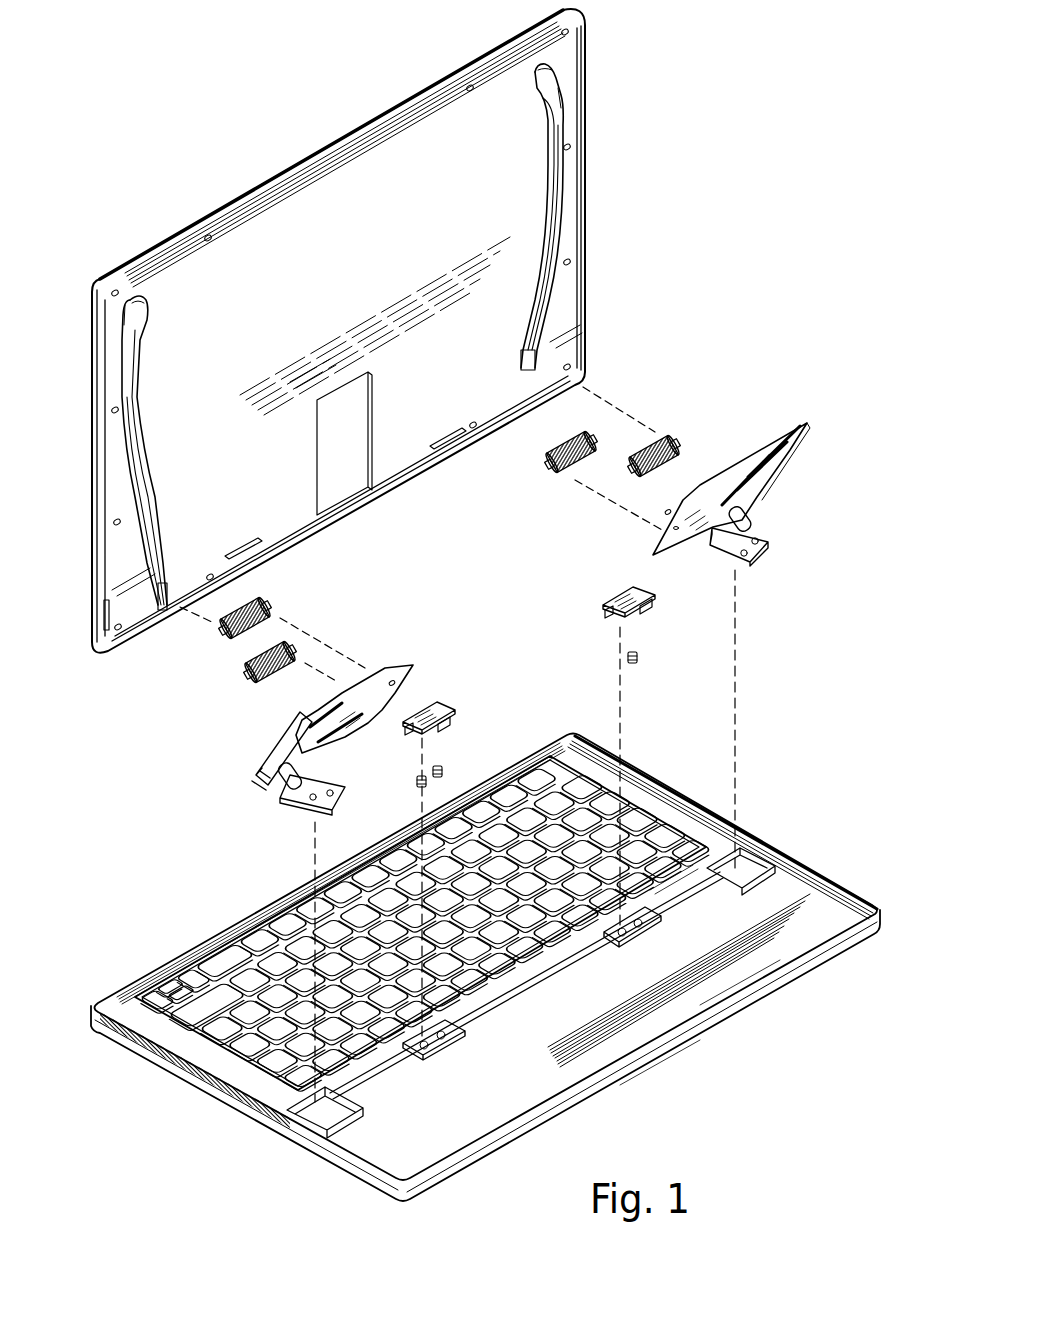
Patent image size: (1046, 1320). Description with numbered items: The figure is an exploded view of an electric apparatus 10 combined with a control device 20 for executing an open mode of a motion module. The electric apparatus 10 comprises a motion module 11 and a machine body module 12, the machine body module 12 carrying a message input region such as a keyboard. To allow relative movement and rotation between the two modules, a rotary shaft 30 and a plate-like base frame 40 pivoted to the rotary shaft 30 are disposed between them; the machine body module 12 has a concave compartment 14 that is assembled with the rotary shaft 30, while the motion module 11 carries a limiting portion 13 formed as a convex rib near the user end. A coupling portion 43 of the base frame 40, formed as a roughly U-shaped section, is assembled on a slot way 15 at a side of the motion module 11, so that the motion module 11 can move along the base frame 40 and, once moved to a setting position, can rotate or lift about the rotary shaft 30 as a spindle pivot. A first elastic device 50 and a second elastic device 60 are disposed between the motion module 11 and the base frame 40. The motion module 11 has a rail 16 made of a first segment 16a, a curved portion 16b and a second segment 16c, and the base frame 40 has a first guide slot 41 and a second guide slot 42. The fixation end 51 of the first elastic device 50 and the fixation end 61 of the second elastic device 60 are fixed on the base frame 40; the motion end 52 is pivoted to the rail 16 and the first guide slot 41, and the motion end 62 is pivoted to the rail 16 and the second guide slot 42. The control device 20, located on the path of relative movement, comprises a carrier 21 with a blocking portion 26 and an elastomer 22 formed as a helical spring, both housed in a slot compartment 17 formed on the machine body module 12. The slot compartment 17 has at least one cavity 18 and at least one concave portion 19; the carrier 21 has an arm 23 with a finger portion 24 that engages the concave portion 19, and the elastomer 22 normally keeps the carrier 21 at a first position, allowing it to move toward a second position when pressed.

The electric apparatus 10 is at (411, 358).
The motion module 11 is at (357, 133).
The machine body module 12 is at (485, 968).
The limiting portion 13 is at (243, 553).
The concave compartment 14 is at (306, 1126).
The slot way 15 is at (590, 215).
The rail 16 is at (371, 328).
The first segment 16a is at (560, 70).
The curved portion 16b is at (572, 110).
The second segment 16c is at (527, 318).
The slot compartment 17 is at (542, 1015).
The cavity 18 is at (483, 1020).
The concave portion 19 is at (416, 1052).
The control device 20 is at (522, 646).
The carrier 21 is at (445, 703).
The elastomer 22 is at (415, 783).
The arm 23 is at (452, 718).
The finger portion 24 is at (410, 729).
The blocking portion 26 is at (421, 705).
The rotary shaft 30 is at (706, 556).
The base frame 40 is at (534, 608).
The first guide slot 41 is at (797, 459).
The second guide slot 42 is at (770, 521).
The coupling portion 43 is at (810, 430).
The first elastic device 50 is at (448, 532).
The fixation end 51 is at (628, 472).
The motion end 52 is at (684, 443).
The second elastic device 60 is at (407, 565).
The fixation end 61 is at (548, 466).
The motion end 62 is at (598, 447).